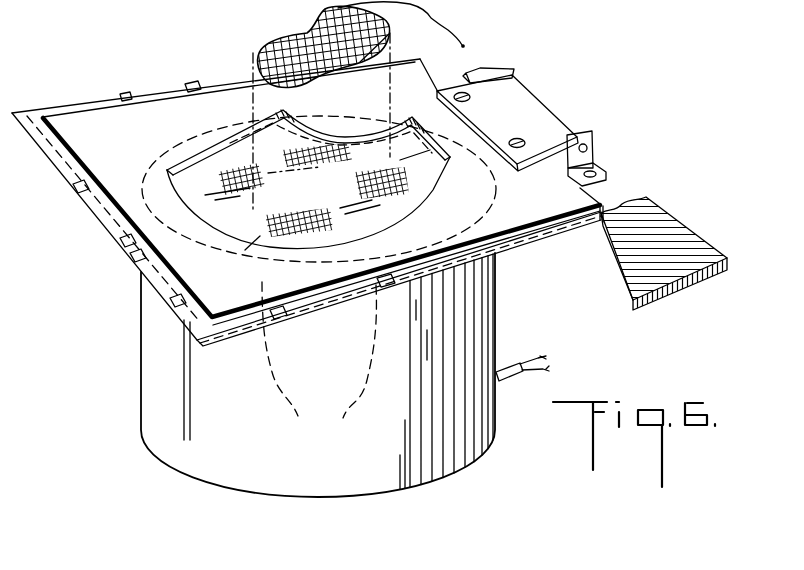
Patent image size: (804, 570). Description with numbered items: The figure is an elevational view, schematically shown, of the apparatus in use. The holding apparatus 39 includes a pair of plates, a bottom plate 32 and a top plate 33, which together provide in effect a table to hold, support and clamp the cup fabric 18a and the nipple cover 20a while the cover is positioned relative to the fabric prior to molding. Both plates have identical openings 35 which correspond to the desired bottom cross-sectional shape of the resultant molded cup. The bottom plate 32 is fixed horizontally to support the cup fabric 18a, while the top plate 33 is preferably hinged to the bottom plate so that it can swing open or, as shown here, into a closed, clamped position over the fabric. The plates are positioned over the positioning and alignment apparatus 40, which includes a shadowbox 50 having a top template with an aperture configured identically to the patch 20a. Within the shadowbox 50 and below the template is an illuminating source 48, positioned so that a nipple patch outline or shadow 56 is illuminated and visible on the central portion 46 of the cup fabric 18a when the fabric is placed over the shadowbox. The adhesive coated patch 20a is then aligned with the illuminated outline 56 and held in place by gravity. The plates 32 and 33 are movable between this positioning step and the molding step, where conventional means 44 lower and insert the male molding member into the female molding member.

The cup fabric 18a is at (183, 155).
The nipple cover 20a is at (307, 40).
The bottom plate 32 is at (547, 237).
The top plate 33 is at (580, 200).
The opening 35 is at (213, 143).
The holding apparatus 39 is at (478, 57).
The positioning and alignment apparatus 40 is at (506, 441).
The conventional means for lowering and inserting the male molding member 44 is at (414, 566).
The central portion 46 is at (330, 187).
The illuminating source 48 is at (277, 380).
The shadowbox 50 is at (170, 428).
The nipple patch outline 56 is at (287, 235).